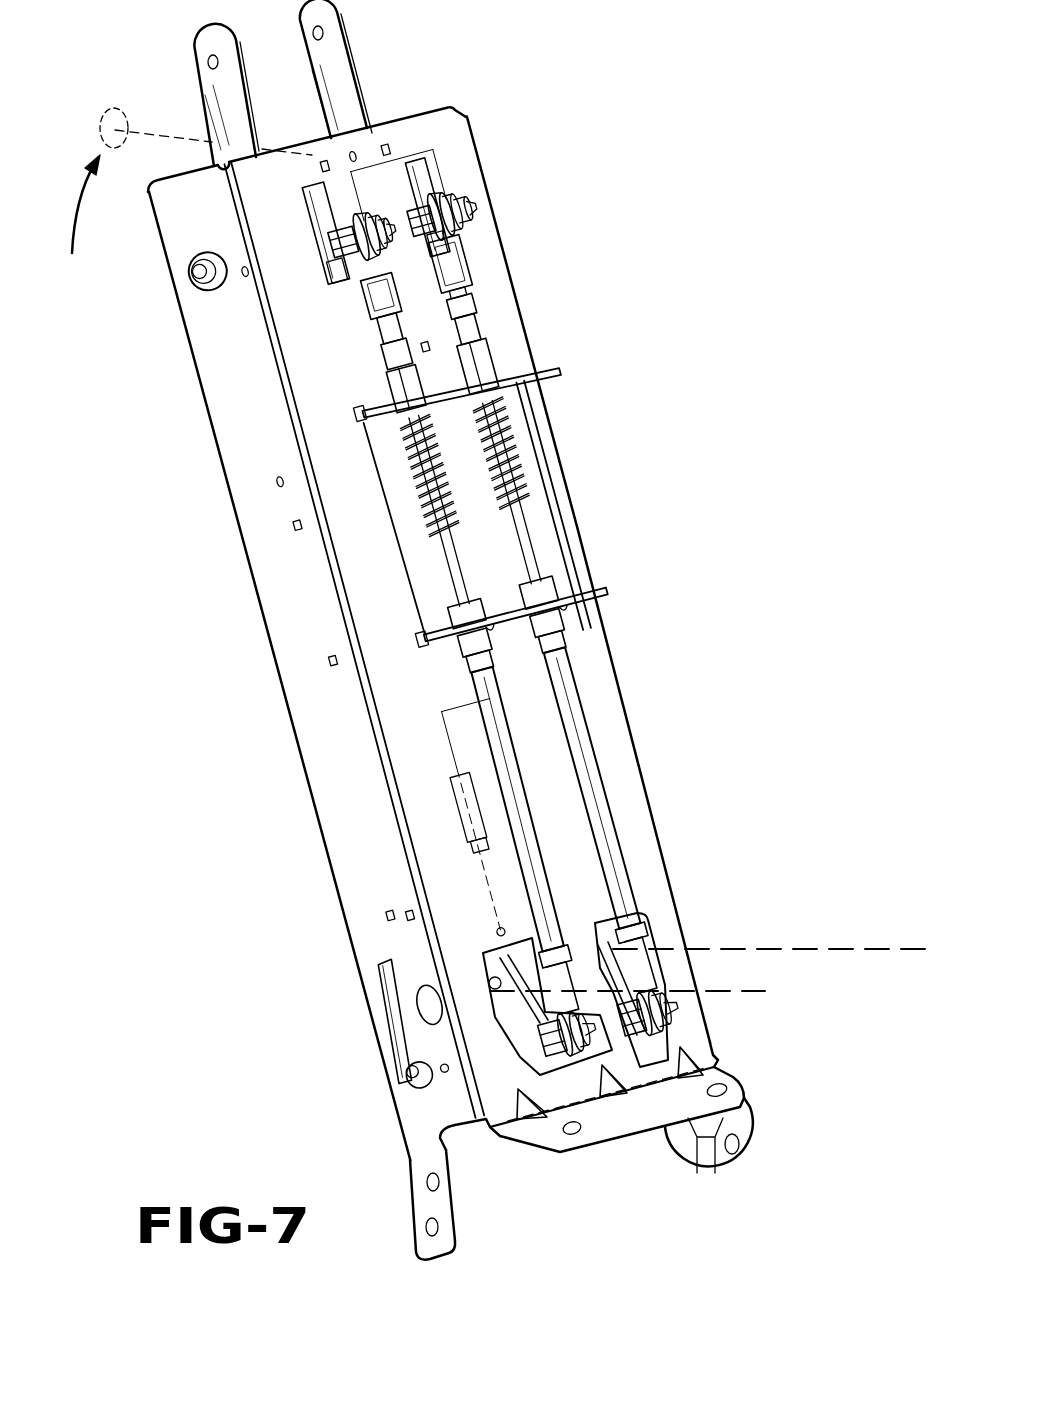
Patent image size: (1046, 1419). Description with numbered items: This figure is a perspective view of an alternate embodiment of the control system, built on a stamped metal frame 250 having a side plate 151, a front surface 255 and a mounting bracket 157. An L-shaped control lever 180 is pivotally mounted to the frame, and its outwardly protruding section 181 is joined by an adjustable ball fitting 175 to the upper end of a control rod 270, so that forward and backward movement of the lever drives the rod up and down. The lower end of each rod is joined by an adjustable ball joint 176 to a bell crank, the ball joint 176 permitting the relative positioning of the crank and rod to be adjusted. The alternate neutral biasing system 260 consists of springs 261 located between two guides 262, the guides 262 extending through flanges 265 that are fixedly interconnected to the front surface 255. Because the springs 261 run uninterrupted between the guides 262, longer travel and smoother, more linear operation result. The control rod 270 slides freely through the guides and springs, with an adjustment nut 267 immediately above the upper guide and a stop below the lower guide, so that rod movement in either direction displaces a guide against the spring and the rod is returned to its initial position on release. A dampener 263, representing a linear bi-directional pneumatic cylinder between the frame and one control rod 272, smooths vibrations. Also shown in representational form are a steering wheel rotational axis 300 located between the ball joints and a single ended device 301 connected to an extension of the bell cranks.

The control lever 180 is at (328, 45).
The outwardly protruding section 181 is at (460, 202).
The adjustable ball fitting 175 is at (468, 270).
The adjustment nut 267 is at (393, 380).
The guides 262 is at (558, 370).
The neutral biasing system 260 is at (580, 458).
The springs 261 is at (537, 541).
The flanges 265 is at (375, 423).
The frame 250 is at (353, 546).
The side plate 151 is at (312, 708).
The front surface 255 is at (272, 272).
The control rod 270 is at (583, 748).
The control rod 272 is at (533, 880).
The dampener 263 is at (477, 872).
The adjustable ball joint 176 is at (640, 968).
The single ended device 301 is at (775, 934).
The steering wheel rotational axis 300 is at (178, 198).
The mounting bracket 157 is at (442, 1210).